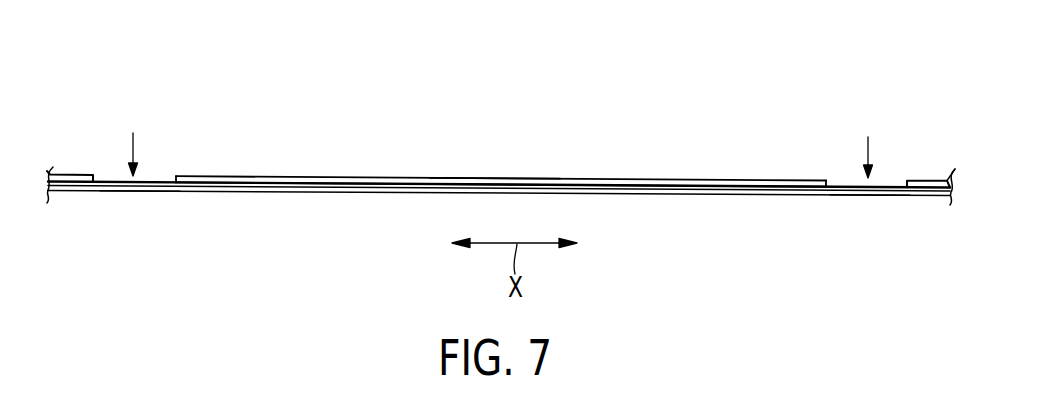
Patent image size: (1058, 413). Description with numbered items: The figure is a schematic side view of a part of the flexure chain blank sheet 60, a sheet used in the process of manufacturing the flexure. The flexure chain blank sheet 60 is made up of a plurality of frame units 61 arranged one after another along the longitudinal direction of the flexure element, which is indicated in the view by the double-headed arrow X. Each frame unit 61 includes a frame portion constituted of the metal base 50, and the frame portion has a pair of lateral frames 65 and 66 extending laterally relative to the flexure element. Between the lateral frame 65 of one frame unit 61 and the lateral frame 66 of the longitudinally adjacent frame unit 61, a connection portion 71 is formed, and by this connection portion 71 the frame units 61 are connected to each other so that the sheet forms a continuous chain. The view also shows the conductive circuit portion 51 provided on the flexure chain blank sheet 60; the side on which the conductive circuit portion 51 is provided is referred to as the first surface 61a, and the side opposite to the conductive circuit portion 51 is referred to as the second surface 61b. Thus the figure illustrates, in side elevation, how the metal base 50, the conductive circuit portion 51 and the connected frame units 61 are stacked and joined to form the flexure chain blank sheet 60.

The metal base 50 is at (316, 194).
The conductive circuit portion 51 is at (485, 178).
The flexure chain blank sheet 60 is at (655, 106).
The frame unit 61 is at (501, 202).
The first surface 61a is at (589, 178).
The second surface 61b is at (608, 195).
The lateral frame 65 is at (158, 181).
The lateral frame 66 is at (112, 181).
The connection portion 71 is at (137, 192).